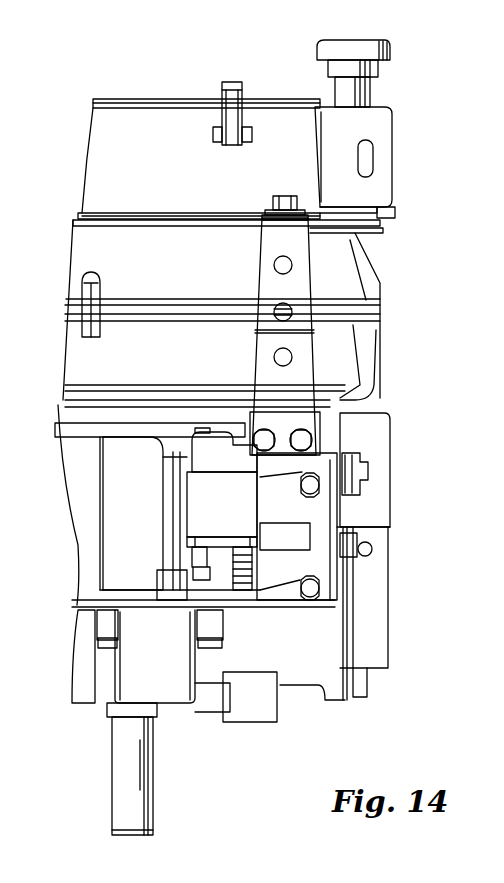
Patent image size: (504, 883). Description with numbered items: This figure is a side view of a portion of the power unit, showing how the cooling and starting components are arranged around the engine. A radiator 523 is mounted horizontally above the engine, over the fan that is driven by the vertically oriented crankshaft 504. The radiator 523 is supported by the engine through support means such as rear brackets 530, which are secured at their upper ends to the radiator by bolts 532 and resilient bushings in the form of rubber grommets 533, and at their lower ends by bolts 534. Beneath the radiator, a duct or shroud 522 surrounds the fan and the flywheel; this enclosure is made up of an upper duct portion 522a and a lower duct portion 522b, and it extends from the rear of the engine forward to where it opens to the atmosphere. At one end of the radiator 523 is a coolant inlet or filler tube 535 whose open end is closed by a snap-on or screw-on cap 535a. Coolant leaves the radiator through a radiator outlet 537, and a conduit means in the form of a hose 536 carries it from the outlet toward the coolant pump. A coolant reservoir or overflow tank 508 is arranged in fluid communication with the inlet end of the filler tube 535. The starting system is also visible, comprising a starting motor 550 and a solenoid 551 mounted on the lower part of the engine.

The radiator 523 is at (158, 149).
The cap 535a is at (388, 42).
The coolant inlet or filler tube 535 is at (372, 93).
The radiator outlet 537 is at (374, 226).
The bolts 532 is at (287, 196).
The rubber grommets 533 is at (272, 212).
The duct or shroud 522 is at (378, 283).
The upper duct portion 522a is at (168, 266).
The lower duct portion 522b is at (168, 366).
The rear brackets 530 is at (272, 245).
The bolts 534 is at (303, 430).
The hose 536 is at (373, 374).
The starting motor 550 is at (117, 540).
The solenoid 551 is at (235, 518).
The coolant reservoir or overflow tank 508 is at (382, 612).
The crankshaft 504 is at (153, 768).